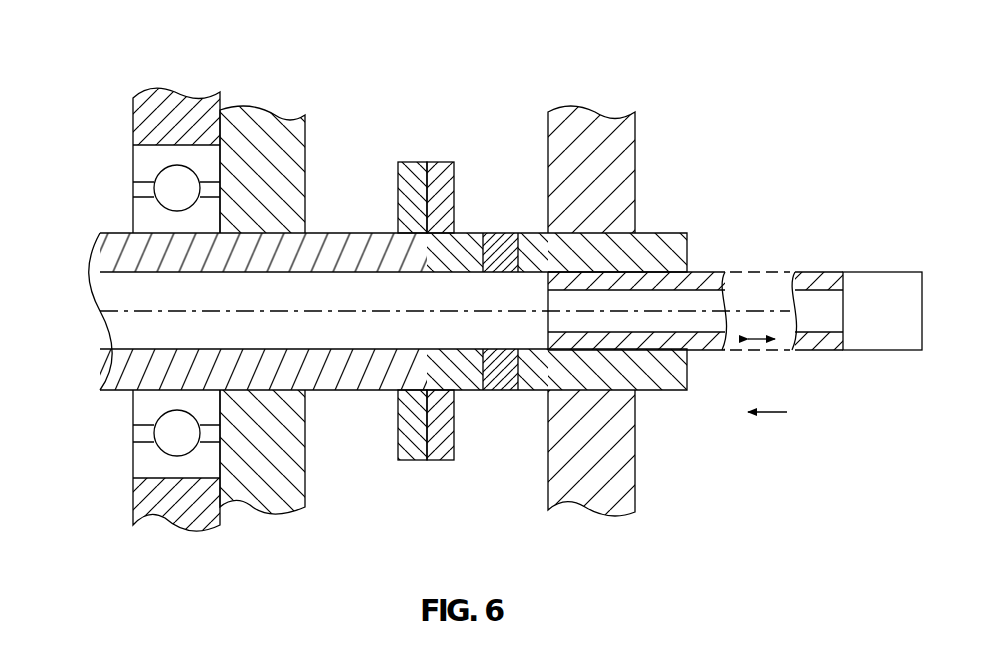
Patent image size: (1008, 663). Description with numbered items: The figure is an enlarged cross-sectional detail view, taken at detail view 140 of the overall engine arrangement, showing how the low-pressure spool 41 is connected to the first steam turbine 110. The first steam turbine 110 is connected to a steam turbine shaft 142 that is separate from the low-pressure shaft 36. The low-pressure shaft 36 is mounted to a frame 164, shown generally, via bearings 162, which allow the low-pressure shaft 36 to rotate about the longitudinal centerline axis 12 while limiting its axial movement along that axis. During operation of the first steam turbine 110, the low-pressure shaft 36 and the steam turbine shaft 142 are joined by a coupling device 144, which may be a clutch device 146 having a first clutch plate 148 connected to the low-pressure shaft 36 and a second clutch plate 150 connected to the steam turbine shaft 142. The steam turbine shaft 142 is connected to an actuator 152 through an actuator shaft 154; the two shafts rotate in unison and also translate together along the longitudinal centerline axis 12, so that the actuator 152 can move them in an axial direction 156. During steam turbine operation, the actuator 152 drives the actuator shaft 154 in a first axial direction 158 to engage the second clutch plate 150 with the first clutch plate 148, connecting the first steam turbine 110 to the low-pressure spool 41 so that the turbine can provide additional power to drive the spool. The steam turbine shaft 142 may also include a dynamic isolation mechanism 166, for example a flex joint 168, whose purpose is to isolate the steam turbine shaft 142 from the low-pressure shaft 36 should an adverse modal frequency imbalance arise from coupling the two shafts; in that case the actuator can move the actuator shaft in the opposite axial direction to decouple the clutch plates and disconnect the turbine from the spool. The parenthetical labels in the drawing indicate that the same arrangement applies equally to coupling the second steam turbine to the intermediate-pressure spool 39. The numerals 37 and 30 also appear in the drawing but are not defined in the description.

The detail view 140 is at (125, 37).
The longitudinal centerline axis 12 is at (300, 312).
The low-pressure shaft 36 is at (93, 258).
The first end 37 is at (219, 279).
The low-pressure spool 41 is at (97, 333).
The intermediate-pressure spool 39 is at (216, 379).
The bearings 162 is at (143, 160).
The frame 164 is at (172, 93).
The housing 30 is at (275, 500).
The first clutch plate 148 is at (410, 162).
The second clutch plate 150 is at (447, 162).
The coupling device 144 is at (423, 468).
The clutch device 146 is at (426, 425).
The flex joint 168 is at (498, 230).
The dynamic isolation mechanism 166 is at (499, 391).
The first steam turbine 110 is at (625, 128).
The steam turbine shaft 142 is at (645, 233).
The actuator shaft 154 is at (697, 272).
The actuator 152 is at (880, 352).
The axial direction 156 is at (762, 345).
The first axial direction 158 is at (766, 413).